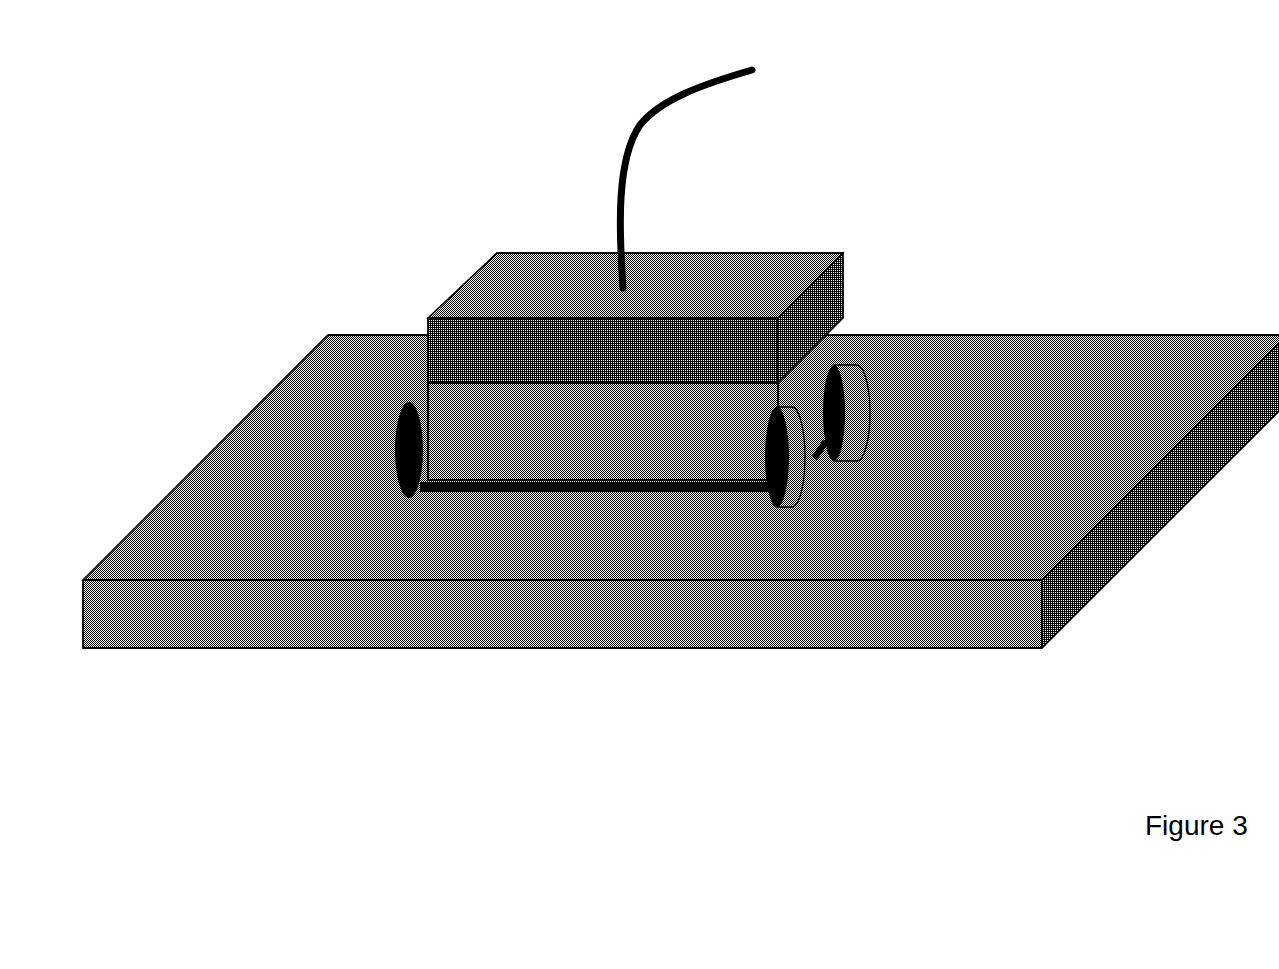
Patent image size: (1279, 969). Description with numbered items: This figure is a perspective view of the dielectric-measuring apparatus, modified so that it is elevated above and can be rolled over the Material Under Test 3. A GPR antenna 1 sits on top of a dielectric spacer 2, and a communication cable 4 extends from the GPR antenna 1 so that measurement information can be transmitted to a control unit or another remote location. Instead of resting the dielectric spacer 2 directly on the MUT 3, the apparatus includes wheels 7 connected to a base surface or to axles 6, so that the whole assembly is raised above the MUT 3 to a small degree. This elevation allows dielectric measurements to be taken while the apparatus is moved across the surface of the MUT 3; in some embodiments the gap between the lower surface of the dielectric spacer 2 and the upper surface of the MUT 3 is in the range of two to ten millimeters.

The GPR antenna 1 is at (500, 288).
The dielectric spacer 2 is at (594, 437).
The Material Under Test 3 is at (1008, 345).
The communication cable 4 is at (679, 96).
The axle 6 is at (580, 494).
The wheel 7 is at (768, 424).